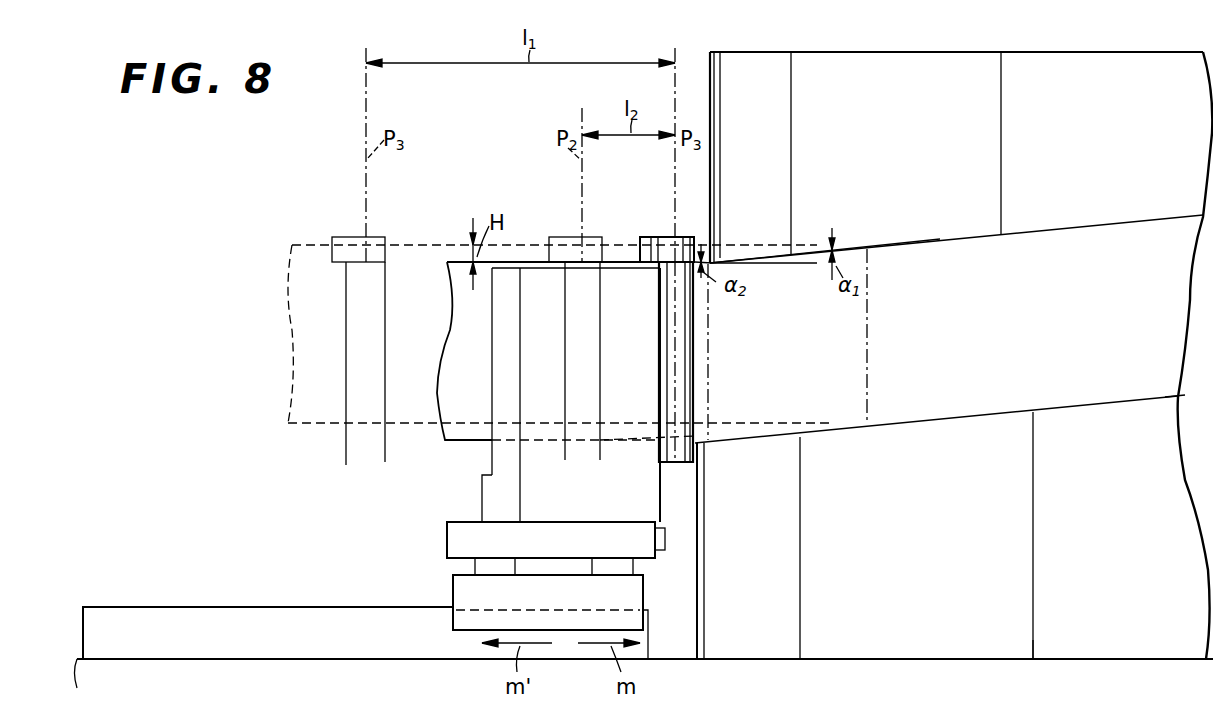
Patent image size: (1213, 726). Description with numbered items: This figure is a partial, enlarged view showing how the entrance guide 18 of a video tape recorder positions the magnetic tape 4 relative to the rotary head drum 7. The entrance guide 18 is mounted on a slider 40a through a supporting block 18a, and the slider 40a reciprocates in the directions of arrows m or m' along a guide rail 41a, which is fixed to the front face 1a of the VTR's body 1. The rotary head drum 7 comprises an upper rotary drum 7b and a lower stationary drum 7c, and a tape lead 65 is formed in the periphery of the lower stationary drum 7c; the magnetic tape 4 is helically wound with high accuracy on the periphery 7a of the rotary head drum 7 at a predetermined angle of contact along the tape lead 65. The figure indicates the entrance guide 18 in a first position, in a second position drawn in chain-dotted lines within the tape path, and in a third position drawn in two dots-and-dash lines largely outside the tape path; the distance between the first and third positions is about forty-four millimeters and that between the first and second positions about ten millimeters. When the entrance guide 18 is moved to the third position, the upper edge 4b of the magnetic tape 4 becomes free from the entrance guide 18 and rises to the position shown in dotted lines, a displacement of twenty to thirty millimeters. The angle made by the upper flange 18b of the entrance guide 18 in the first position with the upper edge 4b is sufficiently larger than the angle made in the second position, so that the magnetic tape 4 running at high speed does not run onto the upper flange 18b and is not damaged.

The VTR's body 1 is at (878, 696).
The front face 1a is at (840, 659).
The magnetic tape 4 is at (452, 398).
The upper edge 4b is at (453, 262).
The rotary head drum 7 is at (1014, 51).
The periphery 7a is at (706, 88).
The upper rotary drum 7b is at (830, 90).
The lower stationary drum 7c is at (1015, 646).
The entrance guide 18 is at (355, 447).
The supporting block 18a is at (627, 330).
The upper flange 18b is at (372, 247).
The slider 40a is at (567, 615).
The guide rail 41a is at (331, 635).
The tape lead 65 is at (1142, 420).